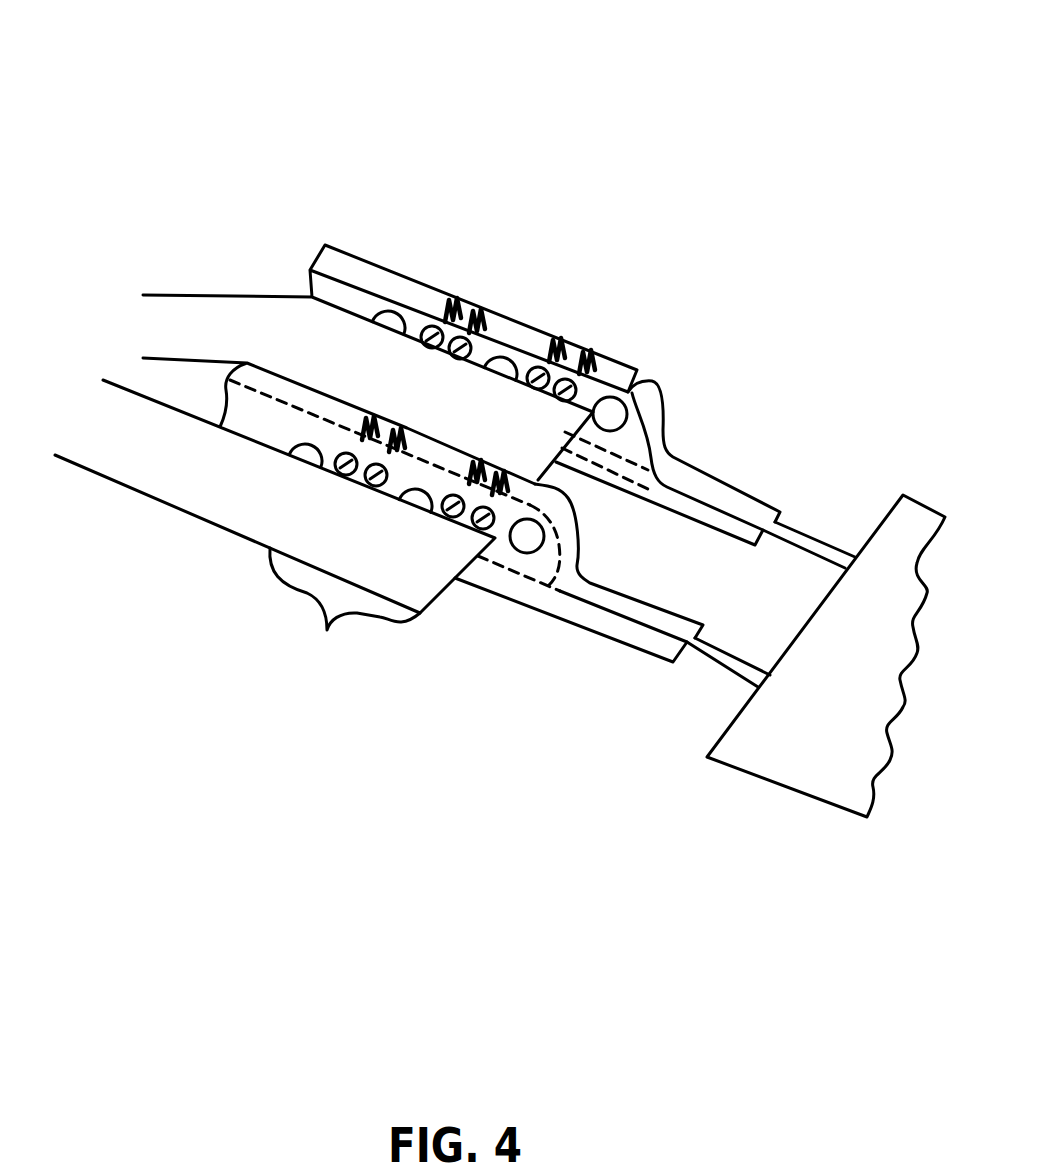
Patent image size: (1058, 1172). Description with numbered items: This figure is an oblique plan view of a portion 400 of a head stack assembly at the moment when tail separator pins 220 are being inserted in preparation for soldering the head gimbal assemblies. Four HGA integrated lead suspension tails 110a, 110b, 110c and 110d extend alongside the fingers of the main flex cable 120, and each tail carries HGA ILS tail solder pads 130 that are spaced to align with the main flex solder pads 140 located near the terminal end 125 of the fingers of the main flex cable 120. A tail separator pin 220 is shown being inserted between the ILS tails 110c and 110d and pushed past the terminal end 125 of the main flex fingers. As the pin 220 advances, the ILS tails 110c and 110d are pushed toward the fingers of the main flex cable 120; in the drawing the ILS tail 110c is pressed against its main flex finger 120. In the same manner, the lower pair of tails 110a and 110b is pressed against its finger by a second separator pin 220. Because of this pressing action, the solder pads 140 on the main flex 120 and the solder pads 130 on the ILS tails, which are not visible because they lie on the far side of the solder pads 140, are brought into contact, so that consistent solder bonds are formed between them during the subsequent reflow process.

The portion of a head stack assembly 400 is at (500, 415).
The main flex cable 120 is at (318, 330).
The terminal end 125 is at (299, 510).
The HGA ILS tail solder pads 130 is at (520, 336).
The main flex solder pads 140 is at (435, 455).
The HGA ILS tail 110a is at (548, 600).
The HGA ILS tail 110b is at (584, 550).
The HGA ILS tail 110c is at (633, 388).
The HGA ILS tail 110d is at (664, 418).
The tail separator pin 220 is at (807, 540).